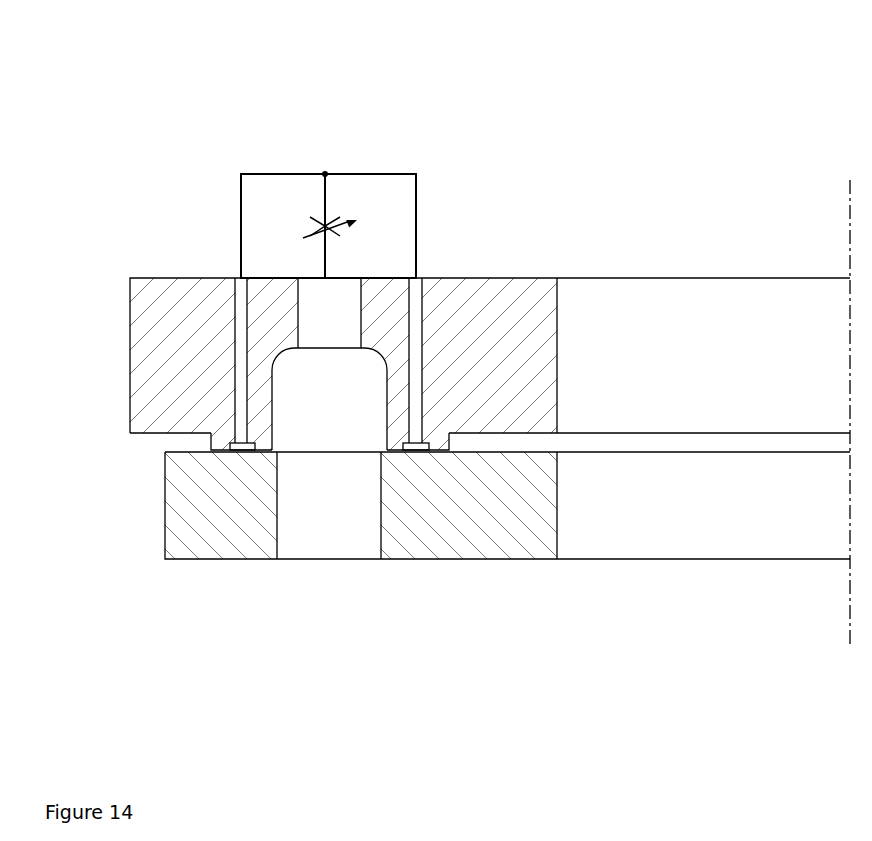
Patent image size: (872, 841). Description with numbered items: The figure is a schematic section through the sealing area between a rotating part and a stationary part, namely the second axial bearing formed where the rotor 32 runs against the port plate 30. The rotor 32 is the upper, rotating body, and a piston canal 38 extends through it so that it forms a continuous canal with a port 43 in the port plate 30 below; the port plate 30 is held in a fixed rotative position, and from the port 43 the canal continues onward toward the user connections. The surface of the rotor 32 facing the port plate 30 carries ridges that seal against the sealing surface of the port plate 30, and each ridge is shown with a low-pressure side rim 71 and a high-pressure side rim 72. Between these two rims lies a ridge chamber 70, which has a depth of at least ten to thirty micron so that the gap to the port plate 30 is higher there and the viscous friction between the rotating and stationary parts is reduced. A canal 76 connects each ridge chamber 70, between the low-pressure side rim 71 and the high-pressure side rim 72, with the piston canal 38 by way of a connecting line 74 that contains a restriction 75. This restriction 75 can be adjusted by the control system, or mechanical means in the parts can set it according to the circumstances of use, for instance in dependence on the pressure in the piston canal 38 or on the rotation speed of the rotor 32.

The port plate 30 is at (507, 511).
The rotor 32 is at (513, 366).
The piston canal 38 is at (322, 307).
The port 43 is at (323, 532).
The ridge chamber 70 is at (413, 447).
The low-pressure side rim 71 is at (442, 452).
The high-pressure side rim 72 is at (395, 449).
The connecting line 74 is at (270, 174).
The restriction 75 is at (388, 198).
The canal 76 is at (420, 385).